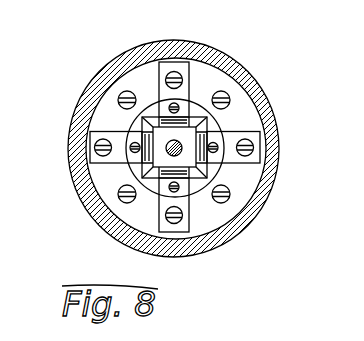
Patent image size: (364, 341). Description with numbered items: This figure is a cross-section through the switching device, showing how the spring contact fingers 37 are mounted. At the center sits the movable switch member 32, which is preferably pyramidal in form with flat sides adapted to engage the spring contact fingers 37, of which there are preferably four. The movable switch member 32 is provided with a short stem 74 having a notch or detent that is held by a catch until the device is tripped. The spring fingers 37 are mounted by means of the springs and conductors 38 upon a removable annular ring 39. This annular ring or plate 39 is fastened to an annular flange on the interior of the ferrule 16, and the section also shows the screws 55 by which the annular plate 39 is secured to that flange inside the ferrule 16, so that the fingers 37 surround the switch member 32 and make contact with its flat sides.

The ferrule 16 is at (105, 68).
The removable annular ring 39 is at (98, 104).
The screws 55 is at (214, 92).
The movable switch member 32 is at (185, 136).
The short stem 74 is at (167, 153).
The spring fingers 37 is at (150, 168).
The springs and conductors 38 is at (218, 157).